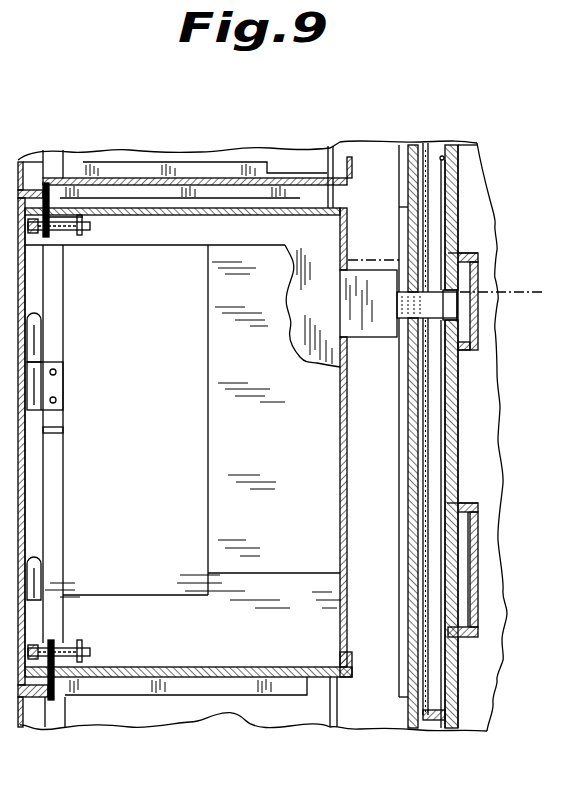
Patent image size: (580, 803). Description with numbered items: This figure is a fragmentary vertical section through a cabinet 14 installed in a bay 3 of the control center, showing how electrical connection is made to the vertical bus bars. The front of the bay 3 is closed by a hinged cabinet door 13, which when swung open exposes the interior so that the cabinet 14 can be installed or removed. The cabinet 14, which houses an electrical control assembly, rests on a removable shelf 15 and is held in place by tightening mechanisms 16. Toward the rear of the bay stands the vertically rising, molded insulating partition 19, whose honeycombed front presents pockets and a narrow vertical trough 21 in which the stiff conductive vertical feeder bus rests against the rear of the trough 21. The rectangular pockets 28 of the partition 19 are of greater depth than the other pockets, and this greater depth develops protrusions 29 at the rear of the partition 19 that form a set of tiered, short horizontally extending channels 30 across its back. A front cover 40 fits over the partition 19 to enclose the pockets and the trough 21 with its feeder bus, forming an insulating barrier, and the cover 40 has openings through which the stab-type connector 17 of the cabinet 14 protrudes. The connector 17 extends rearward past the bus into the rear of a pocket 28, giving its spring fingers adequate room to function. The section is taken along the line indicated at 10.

The bay 3 is at (19, 479).
The section line 10 is at (370, 257).
The cabinet door 13 is at (16, 160).
The cabinet 14 is at (347, 560).
The removable shelf 15 is at (352, 165).
The tightening mechanism 16 is at (88, 232).
The stab-type connector 17 is at (447, 330).
The insulating partition 19 is at (458, 415).
The vertical trough 21 is at (443, 150).
The rectangular pocket 28 is at (466, 343).
The protrusion 29 is at (497, 233).
The horizontally extending channel 30 is at (498, 434).
The front cover 40 is at (407, 557).